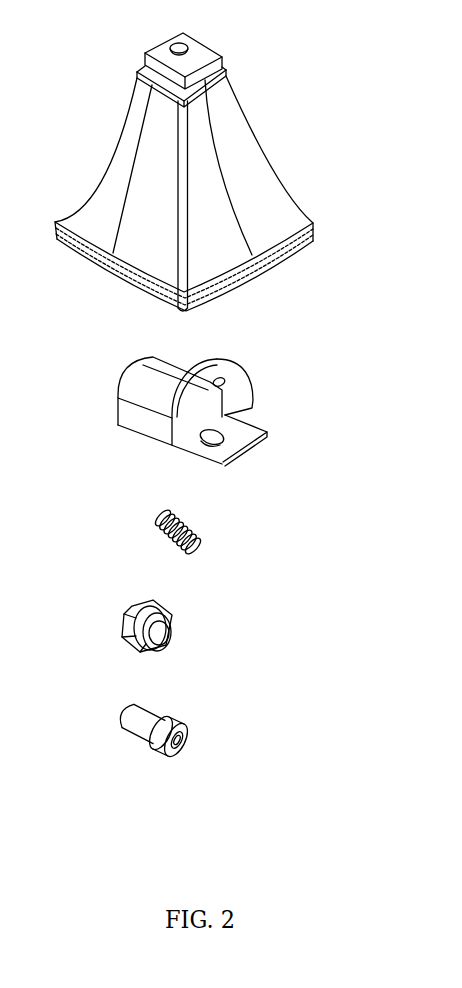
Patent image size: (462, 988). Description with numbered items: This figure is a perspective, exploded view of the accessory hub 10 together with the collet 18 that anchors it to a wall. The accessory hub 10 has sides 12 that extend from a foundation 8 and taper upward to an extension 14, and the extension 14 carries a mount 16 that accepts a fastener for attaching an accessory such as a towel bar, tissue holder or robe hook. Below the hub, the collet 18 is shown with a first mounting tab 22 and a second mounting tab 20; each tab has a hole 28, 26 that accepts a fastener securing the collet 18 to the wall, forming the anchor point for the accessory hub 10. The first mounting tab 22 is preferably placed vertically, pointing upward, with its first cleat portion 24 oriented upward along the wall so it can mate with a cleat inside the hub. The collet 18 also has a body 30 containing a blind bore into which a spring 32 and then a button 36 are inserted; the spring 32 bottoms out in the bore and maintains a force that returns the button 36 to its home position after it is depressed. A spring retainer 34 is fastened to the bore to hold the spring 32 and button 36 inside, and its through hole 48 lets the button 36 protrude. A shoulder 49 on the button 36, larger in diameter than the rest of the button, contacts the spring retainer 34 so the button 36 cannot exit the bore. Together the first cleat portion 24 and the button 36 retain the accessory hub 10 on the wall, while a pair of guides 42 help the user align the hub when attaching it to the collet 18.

The foundation 8 is at (313, 240).
The accessory hub 10 is at (239, 159).
The sides 12 is at (230, 147).
The extension 14 is at (225, 57).
The mount 16 is at (181, 50).
The collet 18 is at (180, 411).
The second mounting tab 20 is at (269, 374).
The first mounting tab 22 is at (229, 463).
The first cleat portion 24 is at (232, 466).
The hole 26 is at (208, 444).
The hole 28 is at (222, 384).
The body 30 is at (164, 380).
The spring 32 is at (152, 543).
The spring retainer 34 is at (146, 635).
The button 36 is at (142, 729).
The pair of guides 42 is at (117, 390).
The through hole 48 is at (158, 633).
The shoulder 49 is at (177, 712).